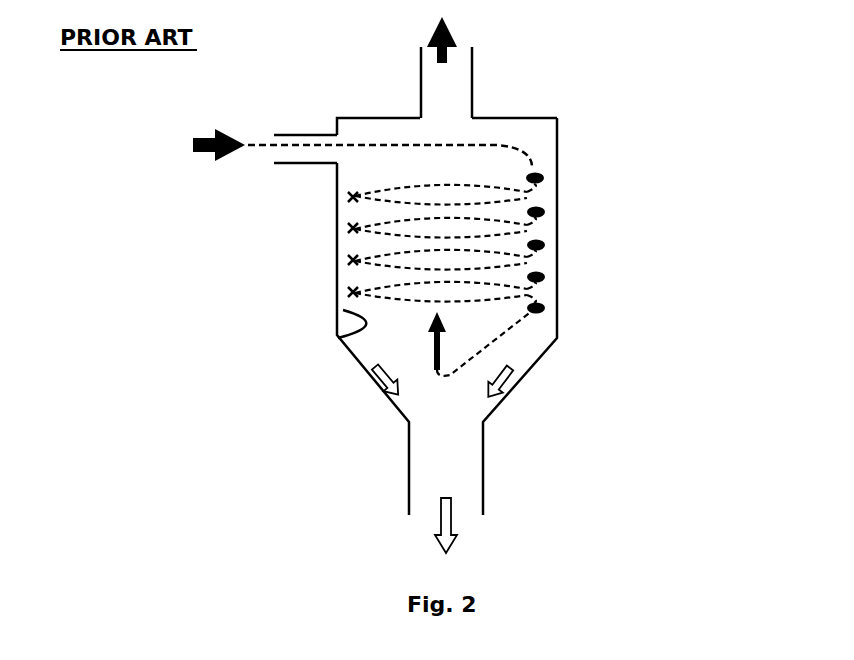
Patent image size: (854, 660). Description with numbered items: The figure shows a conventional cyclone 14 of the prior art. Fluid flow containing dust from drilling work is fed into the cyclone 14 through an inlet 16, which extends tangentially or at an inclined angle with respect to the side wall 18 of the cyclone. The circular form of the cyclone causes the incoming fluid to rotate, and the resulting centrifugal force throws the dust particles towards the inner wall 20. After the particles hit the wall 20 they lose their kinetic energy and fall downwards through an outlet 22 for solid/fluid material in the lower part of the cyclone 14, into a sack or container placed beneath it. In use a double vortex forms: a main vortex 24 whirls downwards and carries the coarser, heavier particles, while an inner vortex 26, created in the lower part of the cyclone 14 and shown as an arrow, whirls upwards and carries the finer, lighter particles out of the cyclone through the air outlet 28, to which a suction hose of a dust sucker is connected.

The cyclone 14 is at (631, 143).
The inlet 16 is at (307, 129).
The side wall 18 is at (343, 184).
The inner wall 20 is at (360, 331).
The outlet for solid/fluid material 22 is at (473, 460).
The main vortex 24 is at (477, 295).
The inner vortex 26 is at (440, 351).
The air outlet 28 is at (455, 73).